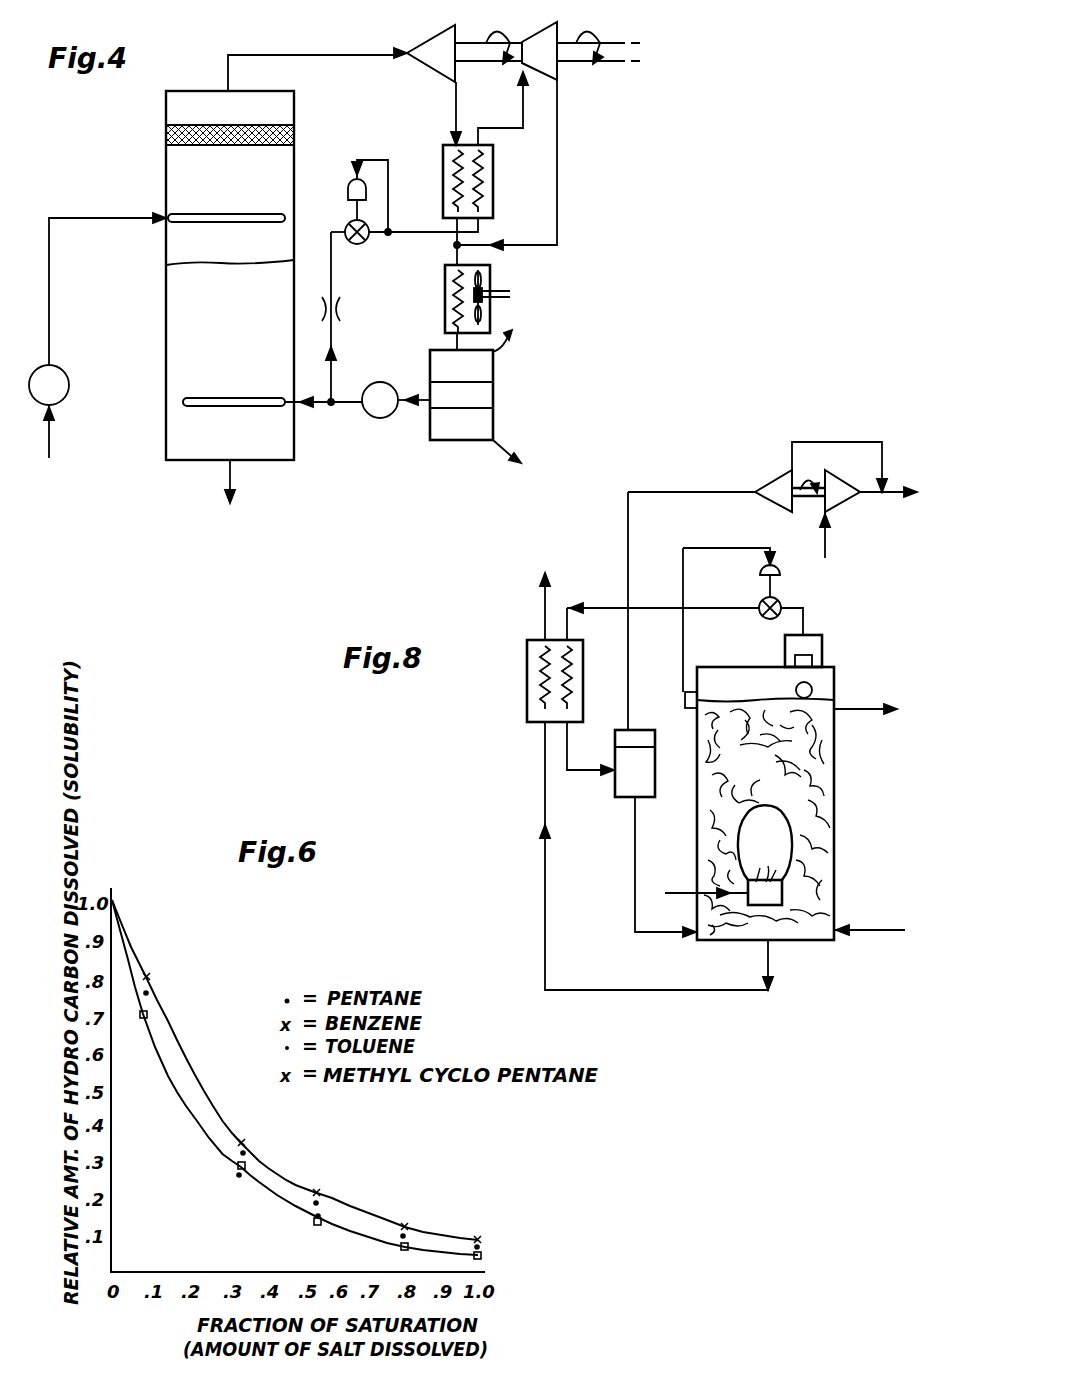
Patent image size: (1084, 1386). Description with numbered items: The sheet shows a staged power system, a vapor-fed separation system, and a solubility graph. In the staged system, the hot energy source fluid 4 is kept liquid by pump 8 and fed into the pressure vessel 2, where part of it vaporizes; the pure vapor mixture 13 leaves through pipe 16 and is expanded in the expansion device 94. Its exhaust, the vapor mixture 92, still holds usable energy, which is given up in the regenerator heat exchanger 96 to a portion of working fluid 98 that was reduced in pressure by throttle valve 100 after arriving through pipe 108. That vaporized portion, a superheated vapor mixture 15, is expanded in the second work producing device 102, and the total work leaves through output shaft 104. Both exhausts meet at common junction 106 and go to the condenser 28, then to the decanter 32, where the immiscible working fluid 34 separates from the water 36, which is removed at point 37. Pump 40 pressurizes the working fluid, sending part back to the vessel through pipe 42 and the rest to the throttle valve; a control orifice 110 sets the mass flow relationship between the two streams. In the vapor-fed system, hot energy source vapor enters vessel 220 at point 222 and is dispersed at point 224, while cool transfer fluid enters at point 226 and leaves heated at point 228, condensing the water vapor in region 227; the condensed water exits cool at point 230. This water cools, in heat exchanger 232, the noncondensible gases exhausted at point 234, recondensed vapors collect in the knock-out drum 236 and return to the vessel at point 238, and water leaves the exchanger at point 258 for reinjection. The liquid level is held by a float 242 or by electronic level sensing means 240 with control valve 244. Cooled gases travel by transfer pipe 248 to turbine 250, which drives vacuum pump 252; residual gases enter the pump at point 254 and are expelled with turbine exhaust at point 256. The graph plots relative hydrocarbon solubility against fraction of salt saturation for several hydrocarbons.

In FIG. 4, the pressure vessel 2 is at (182, 338).
In FIG. 4, the hot energy source fluid 4 is at (52, 438).
In FIG. 4, the pump 8 is at (69, 383).
In FIG. 4, the pure vapor mixture 13 is at (290, 104).
In FIG. 4, the superheated vapor mixture 15 is at (523, 135).
In FIG. 4, the pipe 16 is at (327, 55).
In FIG. 4, the condenser 28 is at (445, 320).
In FIG. 4, the decanter 32 is at (493, 370).
In FIG. 4, the working fluid 34 is at (493, 398).
In FIG. 4, the water 36 is at (493, 425).
In FIG. 4, the water removal point 37 is at (495, 452).
In FIG. 4, the pump 40 is at (378, 418).
In FIG. 4, the pipe 42 is at (330, 412).
In FIG. 4, the vapor mixture 92 is at (452, 96).
In FIG. 4, the expansion device 94 is at (440, 37).
In FIG. 4, the regenerator heat exchanger 96 is at (443, 173).
In FIG. 4, the working fluid 98 is at (450, 242).
In FIG. 4, the throttle valve 100 is at (356, 248).
In FIG. 4, the work producing device 102 is at (550, 30).
In FIG. 4, the output shaft 104 is at (632, 29).
In FIG. 4, the common junction 106 is at (502, 299).
In FIG. 4, the pipe 108 is at (334, 365).
In FIG. 4, the control orifice 110 is at (357, 310).
In FIG. 8, the vessel 220 is at (696, 834).
In FIG. 8, the hot energy source fluid entry point 222 is at (666, 894).
In FIG. 8, the dispersion point 224 is at (784, 890).
In FIG. 8, the transfer fluid inlet point 226 is at (878, 927).
In FIG. 8, the condensing region 227 is at (778, 842).
In FIG. 8, the transfer fluid outlet point 228 is at (876, 699).
In FIG. 8, the condensed water exhaust point 230 is at (771, 971).
In FIG. 8, the heat exchanger 232 is at (527, 683).
In FIG. 8, the noncondensible gas exhaust point 234 is at (806, 628).
In FIG. 8, the knock-out drum 236 is at (627, 797).
In FIG. 8, the reinjection point 238 is at (650, 932).
In FIG. 8, the electronic level sensing means 240 is at (685, 702).
In FIG. 8, the float 242 is at (830, 688).
In FIG. 8, the control valve 244 is at (774, 591).
In FIG. 8, the transfer pipe 248 is at (720, 482).
In FIG. 8, the turbine 250 is at (774, 507).
In FIG. 8, the vacuum pump 252 is at (834, 470).
In FIG. 8, the vacuum pump inlet point 254 is at (827, 545).
In FIG. 8, the exhaust point 256 is at (892, 500).
In FIG. 8, the heat exchanger outlet point 258 is at (534, 614).